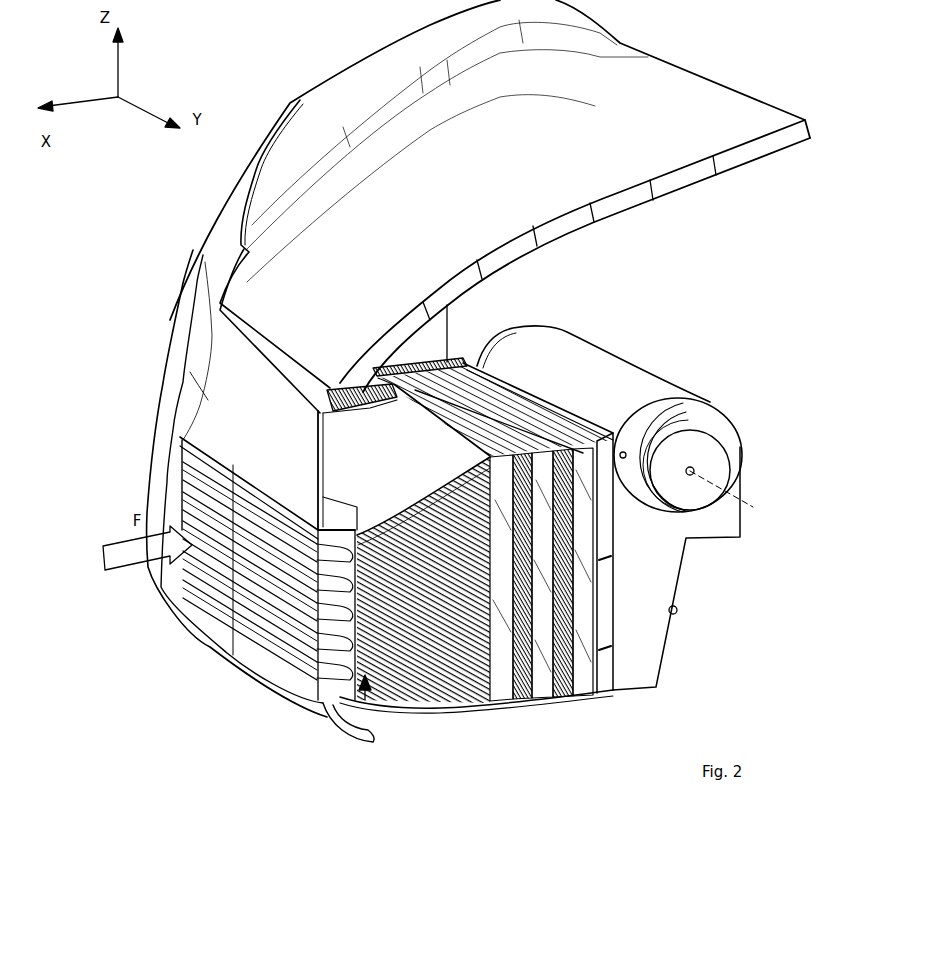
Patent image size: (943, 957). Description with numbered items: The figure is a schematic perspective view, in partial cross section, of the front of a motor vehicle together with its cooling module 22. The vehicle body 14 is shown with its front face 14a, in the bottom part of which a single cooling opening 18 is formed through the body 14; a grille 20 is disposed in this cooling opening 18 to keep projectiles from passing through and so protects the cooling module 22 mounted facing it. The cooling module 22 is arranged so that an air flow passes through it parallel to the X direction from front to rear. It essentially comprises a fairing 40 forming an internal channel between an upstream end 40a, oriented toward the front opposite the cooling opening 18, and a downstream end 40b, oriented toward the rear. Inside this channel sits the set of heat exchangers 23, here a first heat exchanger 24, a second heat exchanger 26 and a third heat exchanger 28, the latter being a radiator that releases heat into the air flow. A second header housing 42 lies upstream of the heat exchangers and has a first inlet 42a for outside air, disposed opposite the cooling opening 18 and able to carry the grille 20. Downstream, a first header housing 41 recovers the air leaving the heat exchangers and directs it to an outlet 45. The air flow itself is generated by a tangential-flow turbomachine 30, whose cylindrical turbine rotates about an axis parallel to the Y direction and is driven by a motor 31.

The body 14 is at (322, 112).
The front face 14a is at (223, 420).
The cooling opening 18 is at (152, 638).
The grille 20 is at (227, 648).
The cooling module 22 is at (727, 680).
The set of heat exchangers 23 is at (525, 682).
The first heat exchanger 24 is at (543, 698).
The second heat exchanger 26 is at (580, 705).
The third heat exchanger 28 is at (503, 700).
The tangential-flow turbomachine 30 is at (686, 410).
The motor 31 is at (698, 450).
The fairing 40 is at (540, 417).
The upstream end 40a is at (465, 715).
The downstream end 40b is at (613, 706).
The first header housing 41 is at (640, 352).
The second header housing 42 is at (410, 722).
The first inlet 42a is at (323, 725).
The outlet 45 is at (740, 540).